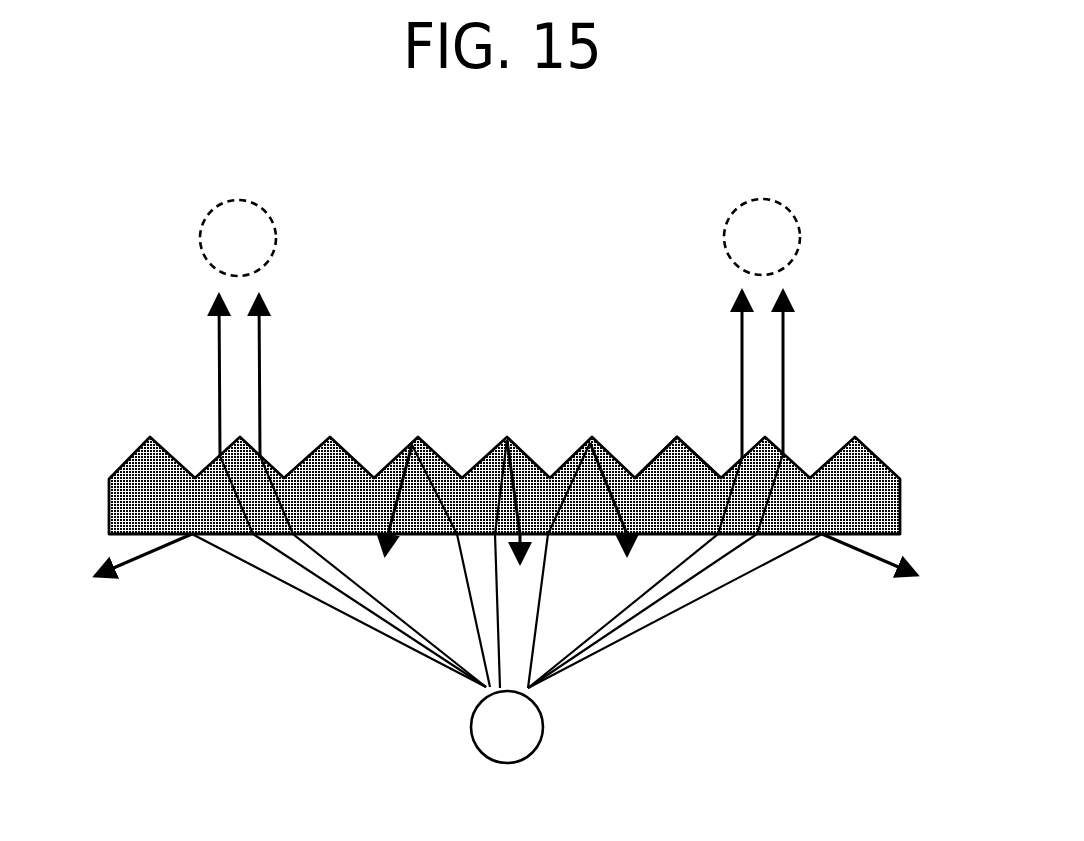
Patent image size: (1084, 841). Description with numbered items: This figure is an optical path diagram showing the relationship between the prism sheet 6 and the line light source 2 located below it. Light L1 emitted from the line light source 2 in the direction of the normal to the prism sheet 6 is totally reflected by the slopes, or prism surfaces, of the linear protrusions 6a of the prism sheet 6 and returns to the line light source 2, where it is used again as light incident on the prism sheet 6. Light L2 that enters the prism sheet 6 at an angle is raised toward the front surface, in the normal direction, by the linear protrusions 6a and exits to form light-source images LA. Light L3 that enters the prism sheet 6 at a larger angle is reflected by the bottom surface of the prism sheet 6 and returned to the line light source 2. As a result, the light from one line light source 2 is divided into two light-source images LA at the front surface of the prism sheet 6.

The prism sheet 6 is at (905, 476).
The linear protrusions 6a is at (688, 447).
The line light source 2 is at (536, 725).
The light L1 is at (465, 587).
The light L2 is at (390, 590).
The light L3 is at (233, 557).
The light-source images LA is at (273, 216).